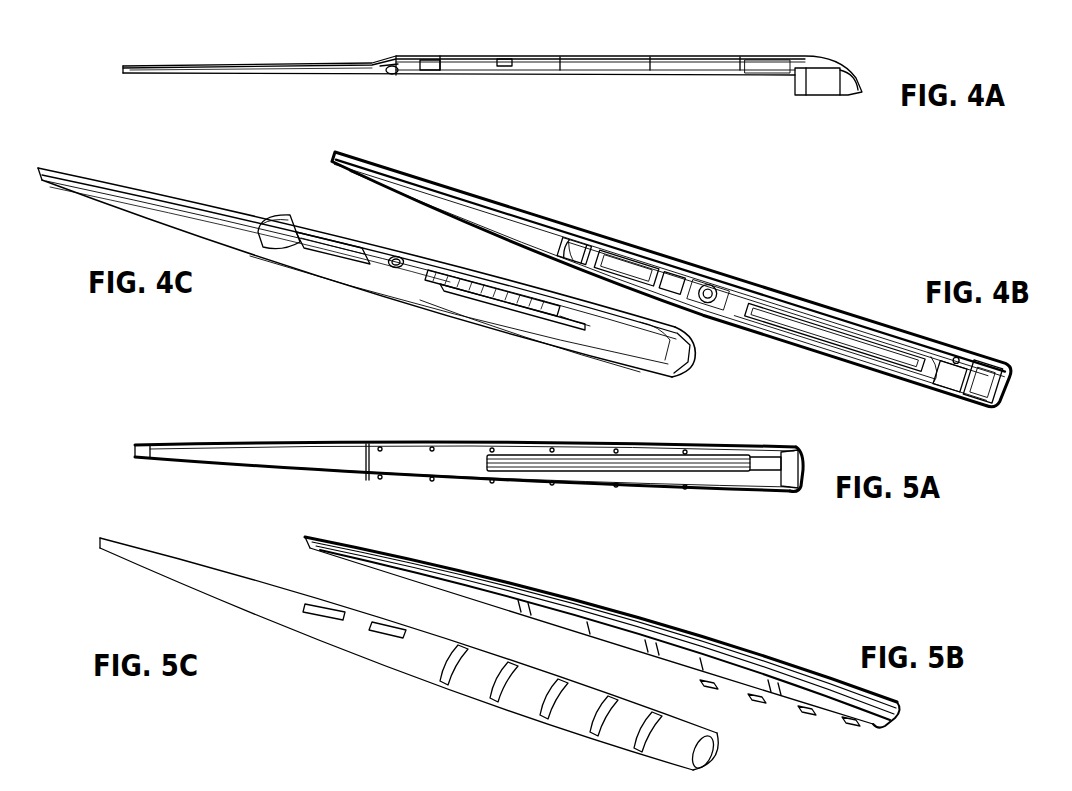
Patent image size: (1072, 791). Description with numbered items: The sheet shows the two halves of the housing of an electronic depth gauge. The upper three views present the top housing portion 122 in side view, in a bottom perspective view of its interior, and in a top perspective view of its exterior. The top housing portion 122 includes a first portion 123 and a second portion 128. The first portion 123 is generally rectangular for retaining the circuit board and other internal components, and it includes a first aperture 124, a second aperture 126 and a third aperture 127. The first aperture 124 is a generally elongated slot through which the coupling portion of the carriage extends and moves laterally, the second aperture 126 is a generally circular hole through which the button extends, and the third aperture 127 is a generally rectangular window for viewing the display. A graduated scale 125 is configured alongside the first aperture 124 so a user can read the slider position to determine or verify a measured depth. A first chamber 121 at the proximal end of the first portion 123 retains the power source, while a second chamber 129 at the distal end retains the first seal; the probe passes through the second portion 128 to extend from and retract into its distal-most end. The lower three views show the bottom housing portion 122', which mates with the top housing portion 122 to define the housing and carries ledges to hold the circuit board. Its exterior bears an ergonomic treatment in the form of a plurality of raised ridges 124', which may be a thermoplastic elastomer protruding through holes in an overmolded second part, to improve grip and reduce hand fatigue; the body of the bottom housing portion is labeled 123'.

In FIG. 4A, the first chamber 121 is at (822, 95).
In FIG. 4B, the first chamber 121 is at (985, 368).
In FIG. 4C, the first chamber 121 is at (628, 362).
In FIG. 4A, the top housing portion 122 is at (533, 51).
In FIG. 4A, the first portion 123 is at (492, 89).
In FIG. 4B, the first portion 123 is at (671, 279).
In FIG. 4C, the first portion 123 is at (356, 272).
In FIG. 4B, the first aperture 124 is at (834, 314).
In FIG. 4C, the first aperture 124 is at (515, 290).
In FIG. 4C, the graduated scale 125 is at (452, 284).
In FIG. 4A, the second aperture 126 is at (502, 68).
In FIG. 4B, the second aperture 126 is at (712, 290).
In FIG. 4C, the second aperture 126 is at (388, 268).
In FIG. 4A, the third aperture 127 is at (448, 69).
In FIG. 4B, the third aperture 127 is at (628, 265).
In FIG. 4C, the third aperture 127 is at (320, 247).
In FIG. 4A, the second portion 128 is at (246, 74).
In FIG. 4C, the second portion 128 is at (176, 200).
In FIG. 4A, the second chamber 129 is at (392, 75).
In FIG. 4B, the second chamber 129 is at (590, 246).
In FIG. 4C, the second chamber 129 is at (288, 222).
In FIG. 5A, the bottom housing portion 122' is at (426, 433).
In FIG. 5A, the blade body (second embodiment) 123' is at (466, 487).
In FIG. 5B, the blade body (second embodiment) 123' is at (602, 632).
In FIG. 5C, the blade body (second embodiment) 123' is at (409, 654).
In FIG. 5B, the raised ridges 124' is at (780, 720).
In FIG. 5C, the raised ridges 124' is at (536, 678).